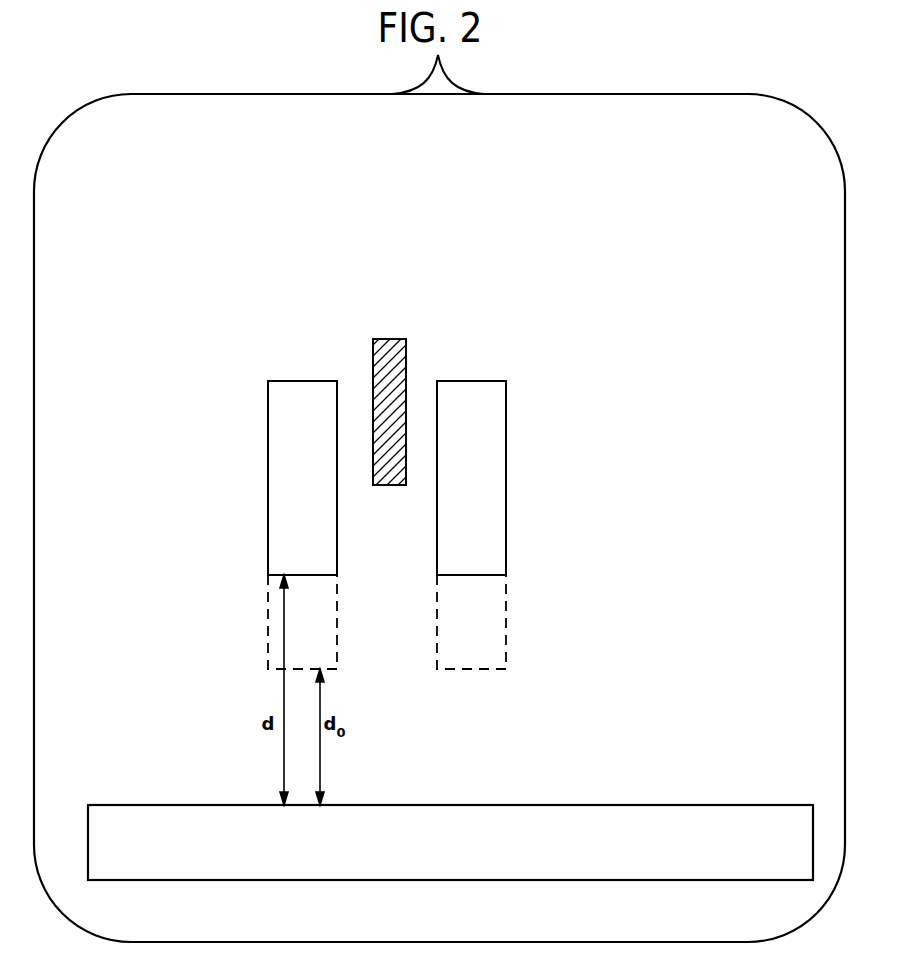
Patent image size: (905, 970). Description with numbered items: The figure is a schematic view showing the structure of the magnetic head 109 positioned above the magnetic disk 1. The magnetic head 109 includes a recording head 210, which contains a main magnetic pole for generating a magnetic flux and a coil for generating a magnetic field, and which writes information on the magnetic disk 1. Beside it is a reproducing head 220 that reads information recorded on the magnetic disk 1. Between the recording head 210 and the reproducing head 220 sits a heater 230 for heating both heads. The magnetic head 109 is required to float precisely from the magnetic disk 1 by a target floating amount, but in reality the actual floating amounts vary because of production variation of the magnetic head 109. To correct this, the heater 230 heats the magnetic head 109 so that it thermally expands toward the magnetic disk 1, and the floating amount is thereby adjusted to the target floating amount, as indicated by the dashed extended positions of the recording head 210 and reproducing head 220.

The magnetic head 109 is at (546, 216).
The recording head 210 is at (287, 443).
The reproducing head 220 is at (482, 463).
The heater 230 is at (385, 355).
The magnetic disk 1 is at (721, 835).